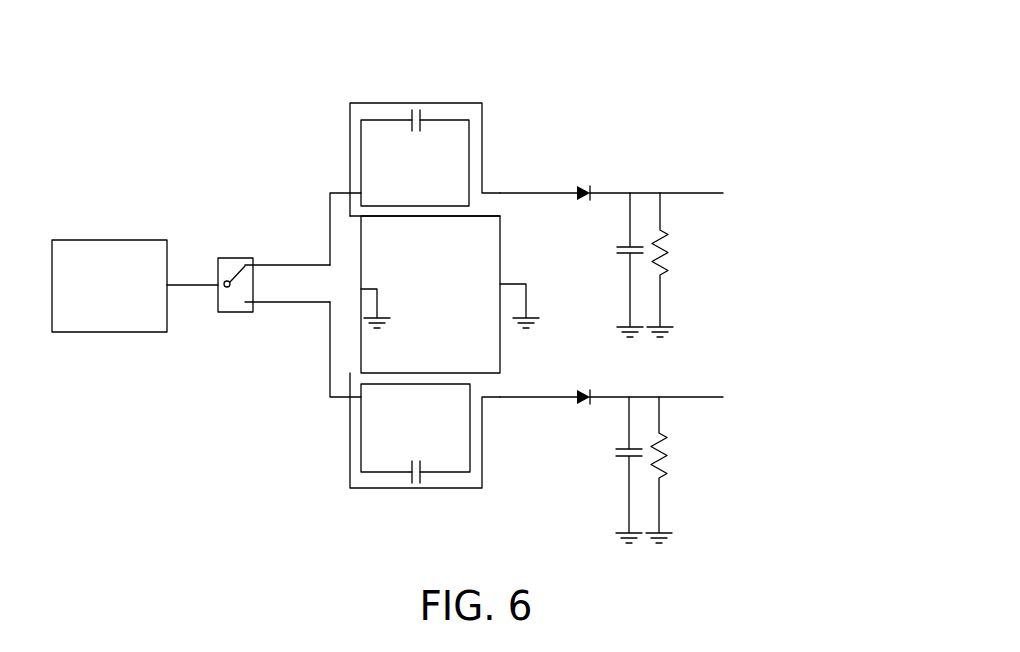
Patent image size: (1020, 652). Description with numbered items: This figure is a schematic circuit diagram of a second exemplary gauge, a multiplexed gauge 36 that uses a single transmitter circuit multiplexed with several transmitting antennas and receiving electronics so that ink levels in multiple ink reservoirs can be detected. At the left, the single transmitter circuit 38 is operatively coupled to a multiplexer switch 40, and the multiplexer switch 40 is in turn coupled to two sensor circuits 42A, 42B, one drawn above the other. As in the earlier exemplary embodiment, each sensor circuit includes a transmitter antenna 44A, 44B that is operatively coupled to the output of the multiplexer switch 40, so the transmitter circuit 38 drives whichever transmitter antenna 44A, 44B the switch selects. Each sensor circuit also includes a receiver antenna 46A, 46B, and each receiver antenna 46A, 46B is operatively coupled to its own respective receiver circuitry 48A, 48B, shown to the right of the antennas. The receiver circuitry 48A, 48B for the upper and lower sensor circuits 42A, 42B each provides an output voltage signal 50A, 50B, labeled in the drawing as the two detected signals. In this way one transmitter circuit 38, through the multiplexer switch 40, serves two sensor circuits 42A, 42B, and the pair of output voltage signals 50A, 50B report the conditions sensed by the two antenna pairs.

The multiplexed gauge 36 is at (612, 291).
The transmitter circuit 38 is at (122, 332).
The multiplexer switch 40 is at (242, 322).
The sensor circuit 42A is at (500, 147).
The sensor circuit 42B is at (512, 488).
The transmitter antenna 44A is at (367, 118).
The transmitter antenna 44B is at (361, 427).
The receiver antenna 46A is at (437, 102).
The receiver antenna 46B is at (402, 490).
The receiver circuitry 48A is at (677, 170).
The receiver circuitry 48B is at (704, 384).
The output voltage signal 50A is at (860, 177).
The output voltage signal 50B is at (868, 383).